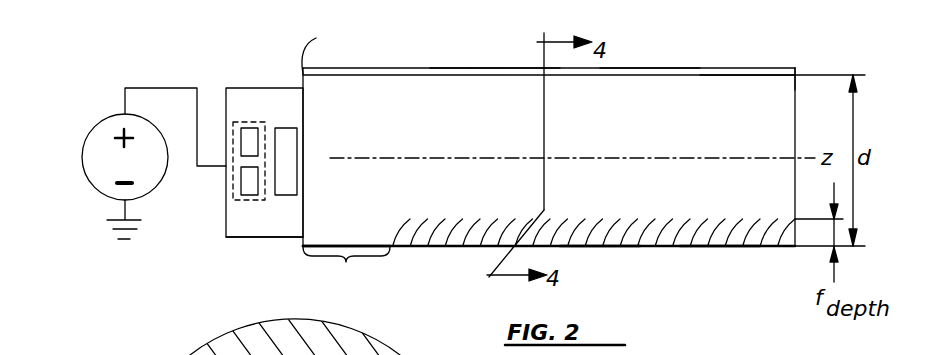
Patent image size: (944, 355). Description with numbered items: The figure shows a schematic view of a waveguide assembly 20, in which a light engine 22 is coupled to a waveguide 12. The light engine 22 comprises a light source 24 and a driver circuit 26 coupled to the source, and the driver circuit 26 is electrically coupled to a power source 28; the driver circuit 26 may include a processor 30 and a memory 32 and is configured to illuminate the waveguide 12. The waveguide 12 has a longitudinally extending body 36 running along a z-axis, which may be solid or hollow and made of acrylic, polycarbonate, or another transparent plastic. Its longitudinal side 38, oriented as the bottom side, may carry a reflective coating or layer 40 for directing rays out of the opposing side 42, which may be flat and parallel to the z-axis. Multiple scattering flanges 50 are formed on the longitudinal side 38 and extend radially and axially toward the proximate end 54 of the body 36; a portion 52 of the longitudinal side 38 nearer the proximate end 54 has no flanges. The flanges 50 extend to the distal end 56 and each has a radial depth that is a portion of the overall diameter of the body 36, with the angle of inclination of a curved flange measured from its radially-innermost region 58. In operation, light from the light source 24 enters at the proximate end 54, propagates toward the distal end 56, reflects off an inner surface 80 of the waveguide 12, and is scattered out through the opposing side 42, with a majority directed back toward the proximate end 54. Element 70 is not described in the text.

The waveguide 12 is at (521, 58).
The waveguide assembly 20 is at (418, 56).
The light engine 22 is at (256, 78).
The light source 24 is at (286, 150).
The driver circuit 26 is at (243, 122).
The power source 28 is at (103, 120).
The processor 30 is at (240, 152).
The memory 32 is at (240, 190).
The body 36 is at (698, 103).
The longitudinal side 38 is at (604, 247).
The reflective coating or layer 40 is at (712, 247).
The opposing side 42 is at (676, 68).
The scattering flanges 50 is at (597, 225).
The portion 52 is at (346, 269).
The proximate end 54 is at (321, 45).
The distal end 56 is at (798, 80).
The radially-innermost region 58 is at (498, 223).
The leading fins 70 is at (420, 246).
The inner surface 80 is at (440, 75).